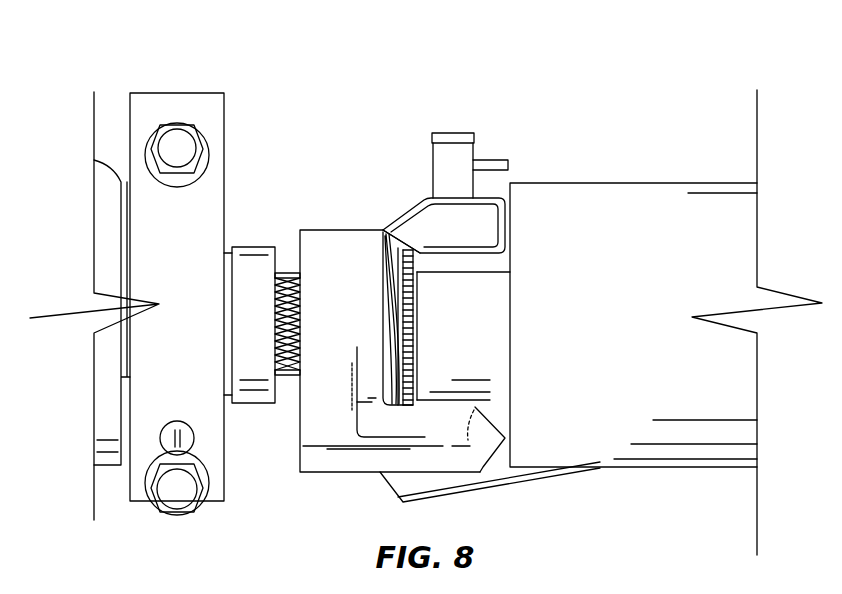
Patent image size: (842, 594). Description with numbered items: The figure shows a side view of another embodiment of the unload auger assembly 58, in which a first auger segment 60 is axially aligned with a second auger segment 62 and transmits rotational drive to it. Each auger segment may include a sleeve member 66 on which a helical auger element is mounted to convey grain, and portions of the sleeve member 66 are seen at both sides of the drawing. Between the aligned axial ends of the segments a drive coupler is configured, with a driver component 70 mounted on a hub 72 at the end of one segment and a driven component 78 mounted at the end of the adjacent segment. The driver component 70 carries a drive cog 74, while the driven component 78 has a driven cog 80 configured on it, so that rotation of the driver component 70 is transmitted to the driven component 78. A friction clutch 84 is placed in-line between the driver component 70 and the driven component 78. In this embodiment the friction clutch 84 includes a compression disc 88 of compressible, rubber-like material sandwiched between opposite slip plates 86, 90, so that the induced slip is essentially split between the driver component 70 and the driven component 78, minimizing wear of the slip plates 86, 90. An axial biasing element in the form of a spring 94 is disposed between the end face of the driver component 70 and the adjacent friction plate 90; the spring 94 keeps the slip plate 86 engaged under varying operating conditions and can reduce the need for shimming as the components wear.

The unload auger assembly 58 is at (633, 247).
The first auger segment 60 is at (256, 140).
The second auger segment 62 is at (656, 168).
The sleeve member 66 is at (112, 405).
The driver component 70 is at (358, 228).
The hub 72 is at (240, 405).
The drive cog 74 is at (395, 462).
The driven component 78 is at (498, 280).
The driven cog 80 is at (452, 213).
The friction clutch 84 is at (425, 286).
The slip plate 86 is at (412, 310).
The compression disc 88 is at (405, 337).
The slip plate 90 is at (400, 350).
The spring 94 is at (392, 280).